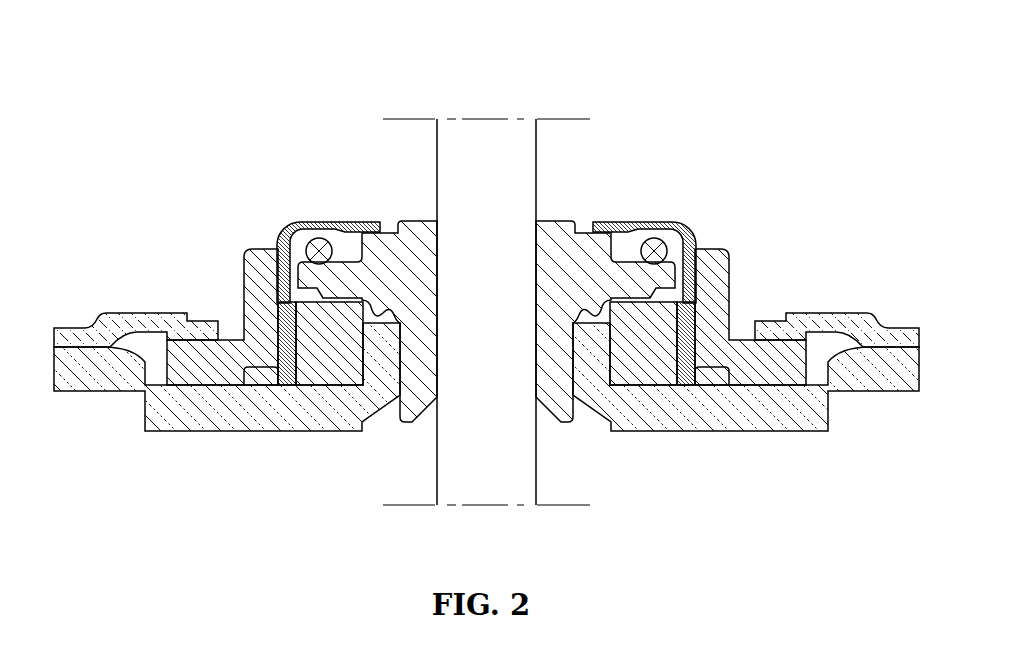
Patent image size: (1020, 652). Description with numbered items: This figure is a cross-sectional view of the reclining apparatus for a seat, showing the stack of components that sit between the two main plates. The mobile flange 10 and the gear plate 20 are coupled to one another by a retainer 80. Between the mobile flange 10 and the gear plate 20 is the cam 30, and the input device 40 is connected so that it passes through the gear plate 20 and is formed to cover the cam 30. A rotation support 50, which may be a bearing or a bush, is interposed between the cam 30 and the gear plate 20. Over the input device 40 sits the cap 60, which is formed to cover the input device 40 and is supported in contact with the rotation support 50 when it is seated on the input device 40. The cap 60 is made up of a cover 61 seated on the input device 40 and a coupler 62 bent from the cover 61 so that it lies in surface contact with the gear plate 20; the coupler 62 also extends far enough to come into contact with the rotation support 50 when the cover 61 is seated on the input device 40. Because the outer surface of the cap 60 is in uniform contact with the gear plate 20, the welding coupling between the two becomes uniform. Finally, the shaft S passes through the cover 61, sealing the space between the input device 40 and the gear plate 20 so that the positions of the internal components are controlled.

The mobile flange 10 is at (730, 410).
The gear plate 20 is at (713, 277).
The cam 30 is at (327, 363).
The input device 40 is at (576, 233).
The rotation support 50 is at (285, 373).
The cap 60 is at (302, 210).
The cover 61 is at (326, 236).
The coupler 62 is at (250, 248).
The retainer 80 is at (855, 324).
The shaft S is at (476, 162).